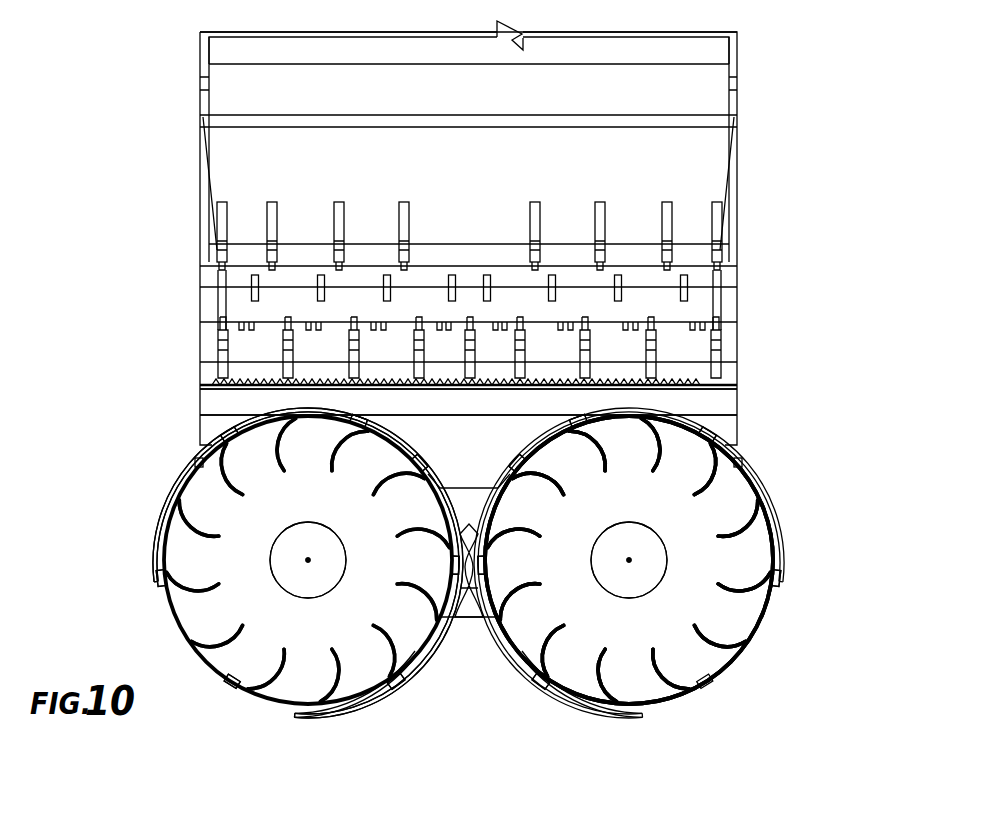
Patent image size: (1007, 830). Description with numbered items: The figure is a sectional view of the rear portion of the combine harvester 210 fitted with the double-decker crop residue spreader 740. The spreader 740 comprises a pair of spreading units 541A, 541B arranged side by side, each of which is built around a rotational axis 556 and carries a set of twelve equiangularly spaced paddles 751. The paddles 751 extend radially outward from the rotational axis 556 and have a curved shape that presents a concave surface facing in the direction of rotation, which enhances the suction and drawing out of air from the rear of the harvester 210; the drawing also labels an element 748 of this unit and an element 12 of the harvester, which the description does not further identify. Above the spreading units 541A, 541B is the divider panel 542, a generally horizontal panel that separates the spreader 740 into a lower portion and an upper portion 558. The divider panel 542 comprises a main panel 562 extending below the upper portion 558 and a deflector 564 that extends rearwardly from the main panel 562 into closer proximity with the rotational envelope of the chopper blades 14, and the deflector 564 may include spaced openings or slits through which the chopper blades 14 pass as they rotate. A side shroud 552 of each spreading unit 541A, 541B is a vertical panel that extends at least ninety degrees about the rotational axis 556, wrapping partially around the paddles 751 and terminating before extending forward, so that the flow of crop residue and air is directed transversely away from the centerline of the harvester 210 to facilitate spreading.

The frame 12 is at (732, 278).
The chopper blades 14 is at (722, 232).
The combine harvester 210 is at (197, 170).
The deflector 564 is at (217, 402).
The spreading unit 541A is at (132, 577).
The spreading unit 541B is at (770, 457).
The double-decker crop residue spreader 740 is at (800, 645).
The upper portion 558 is at (776, 596).
The paddles 748 is at (752, 527).
The main panel 562 is at (740, 555).
The rotational axis 556 is at (308, 560).
The paddles 751 is at (187, 523).
The divider panel 542 is at (223, 658).
The side shroud 552 is at (422, 670).